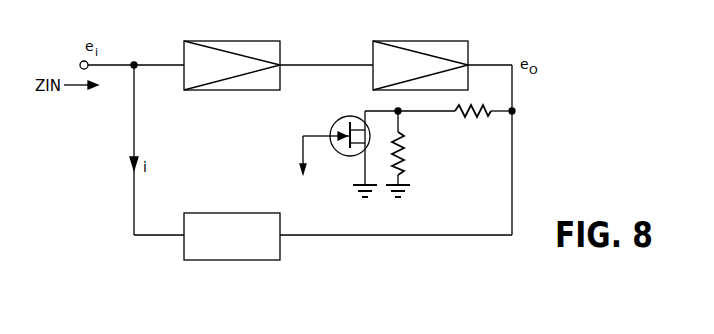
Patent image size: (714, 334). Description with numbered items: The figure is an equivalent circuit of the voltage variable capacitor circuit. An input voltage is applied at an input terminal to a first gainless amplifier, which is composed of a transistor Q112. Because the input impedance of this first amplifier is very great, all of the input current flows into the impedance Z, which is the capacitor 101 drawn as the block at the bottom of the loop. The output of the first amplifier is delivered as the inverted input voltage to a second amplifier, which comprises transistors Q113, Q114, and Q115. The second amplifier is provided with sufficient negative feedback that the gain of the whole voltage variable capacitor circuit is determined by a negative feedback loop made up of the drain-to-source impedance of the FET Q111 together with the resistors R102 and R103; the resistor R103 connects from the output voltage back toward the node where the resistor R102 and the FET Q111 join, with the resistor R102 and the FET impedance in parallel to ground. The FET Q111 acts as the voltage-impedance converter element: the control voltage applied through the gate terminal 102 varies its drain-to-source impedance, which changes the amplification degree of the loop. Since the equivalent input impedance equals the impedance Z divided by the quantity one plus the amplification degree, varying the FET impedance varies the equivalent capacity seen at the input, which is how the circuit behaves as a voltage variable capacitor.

The transistor Q112 is at (270, 40).
The transistor Q113 is at (442, 48).
The transistor Q114 is at (442, 48).
The transistor Q115 is at (421, 40).
The FET Q111 is at (338, 122).
The base input terminal 102 is at (310, 166).
The resistor R102 is at (404, 156).
The resistor R103 is at (461, 114).
The capacitor 101 is at (271, 261).